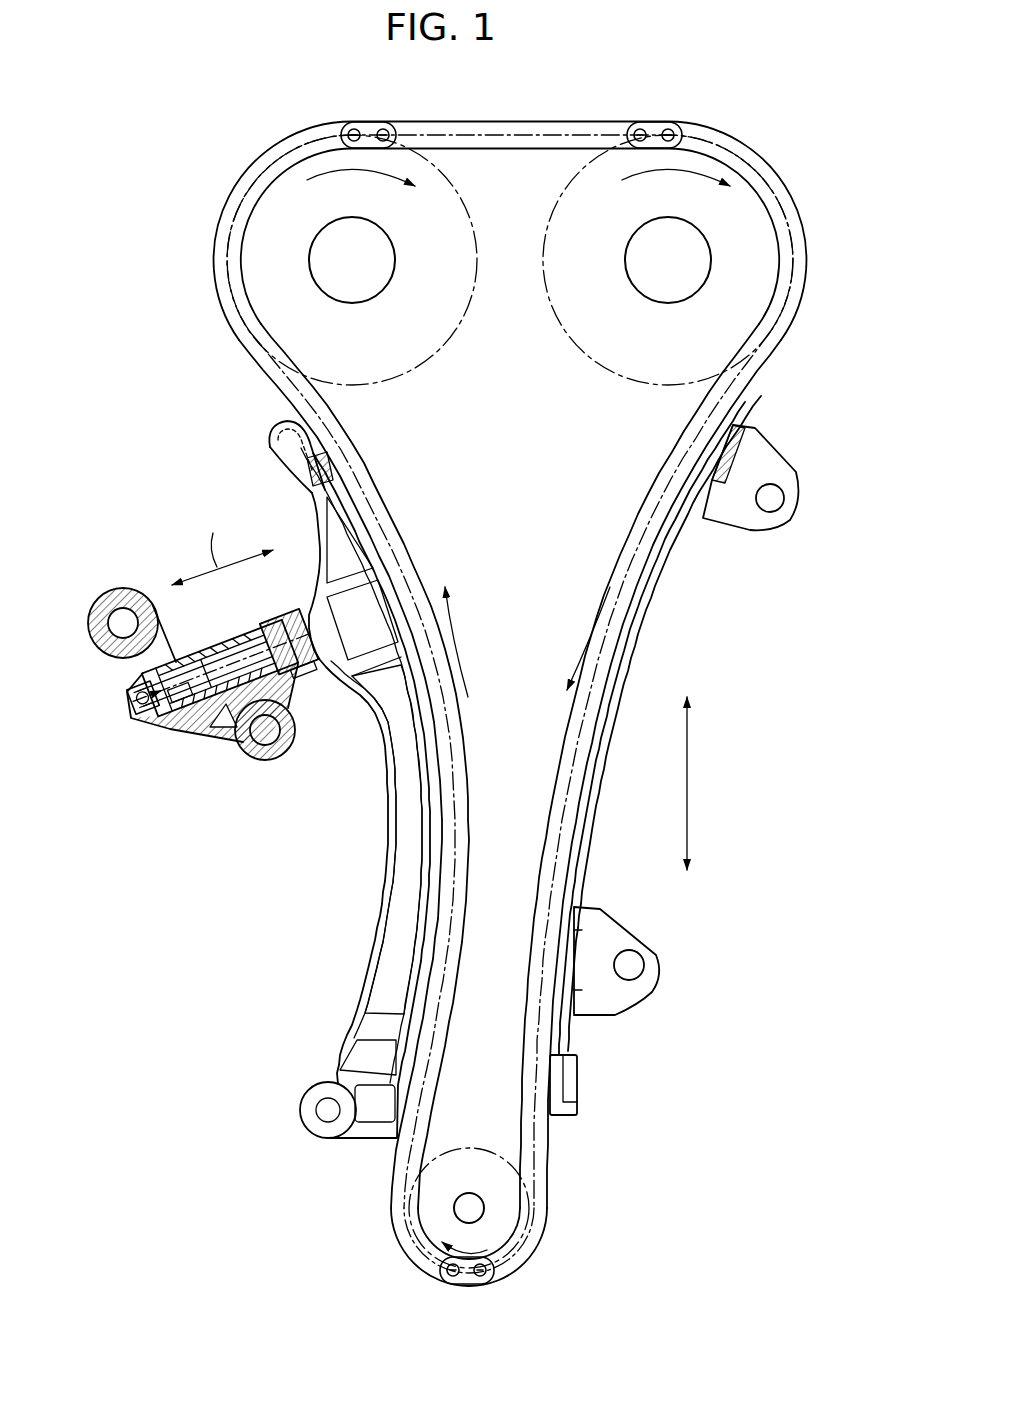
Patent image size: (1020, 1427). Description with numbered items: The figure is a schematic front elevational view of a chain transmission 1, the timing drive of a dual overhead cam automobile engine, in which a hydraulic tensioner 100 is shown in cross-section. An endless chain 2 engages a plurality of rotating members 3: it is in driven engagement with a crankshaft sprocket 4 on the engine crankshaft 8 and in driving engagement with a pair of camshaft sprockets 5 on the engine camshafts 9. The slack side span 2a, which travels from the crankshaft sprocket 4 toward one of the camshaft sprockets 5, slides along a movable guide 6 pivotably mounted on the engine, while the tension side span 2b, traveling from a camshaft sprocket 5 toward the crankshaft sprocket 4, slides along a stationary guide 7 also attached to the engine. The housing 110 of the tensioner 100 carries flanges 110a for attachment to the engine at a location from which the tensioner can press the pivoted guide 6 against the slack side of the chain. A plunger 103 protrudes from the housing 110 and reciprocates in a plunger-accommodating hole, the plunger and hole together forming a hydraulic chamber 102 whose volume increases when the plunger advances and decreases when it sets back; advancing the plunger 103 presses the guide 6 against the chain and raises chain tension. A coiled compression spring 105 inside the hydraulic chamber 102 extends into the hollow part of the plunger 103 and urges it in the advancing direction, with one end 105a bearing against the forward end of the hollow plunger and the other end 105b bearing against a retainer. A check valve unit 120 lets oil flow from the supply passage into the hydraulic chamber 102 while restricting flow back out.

The chain transmission 1 is at (196, 962).
The chain 2 is at (536, 122).
The slack side span 2a is at (395, 510).
The tension side span 2b is at (645, 532).
The rotating members 3 is at (510, 701).
The crankshaft sprocket 4 is at (449, 1152).
The camshaft sprockets 5 is at (405, 373).
The movable guide 6 is at (383, 837).
The stationary guide 7 is at (676, 580).
The engine crankshaft 8 is at (484, 1208).
The engine camshafts 9 is at (395, 260).
The hydraulic tensioner 100 is at (122, 512).
The hydraulic chamber 102 is at (222, 668).
The plunger 103 is at (302, 670).
The coiled compression spring 105 is at (223, 747).
The one end of the spring 105a is at (300, 648).
The other end of the spring 105b is at (127, 673).
The housing 110 is at (180, 737).
The flanges 110a is at (113, 603).
The check valve unit 120 is at (177, 693).